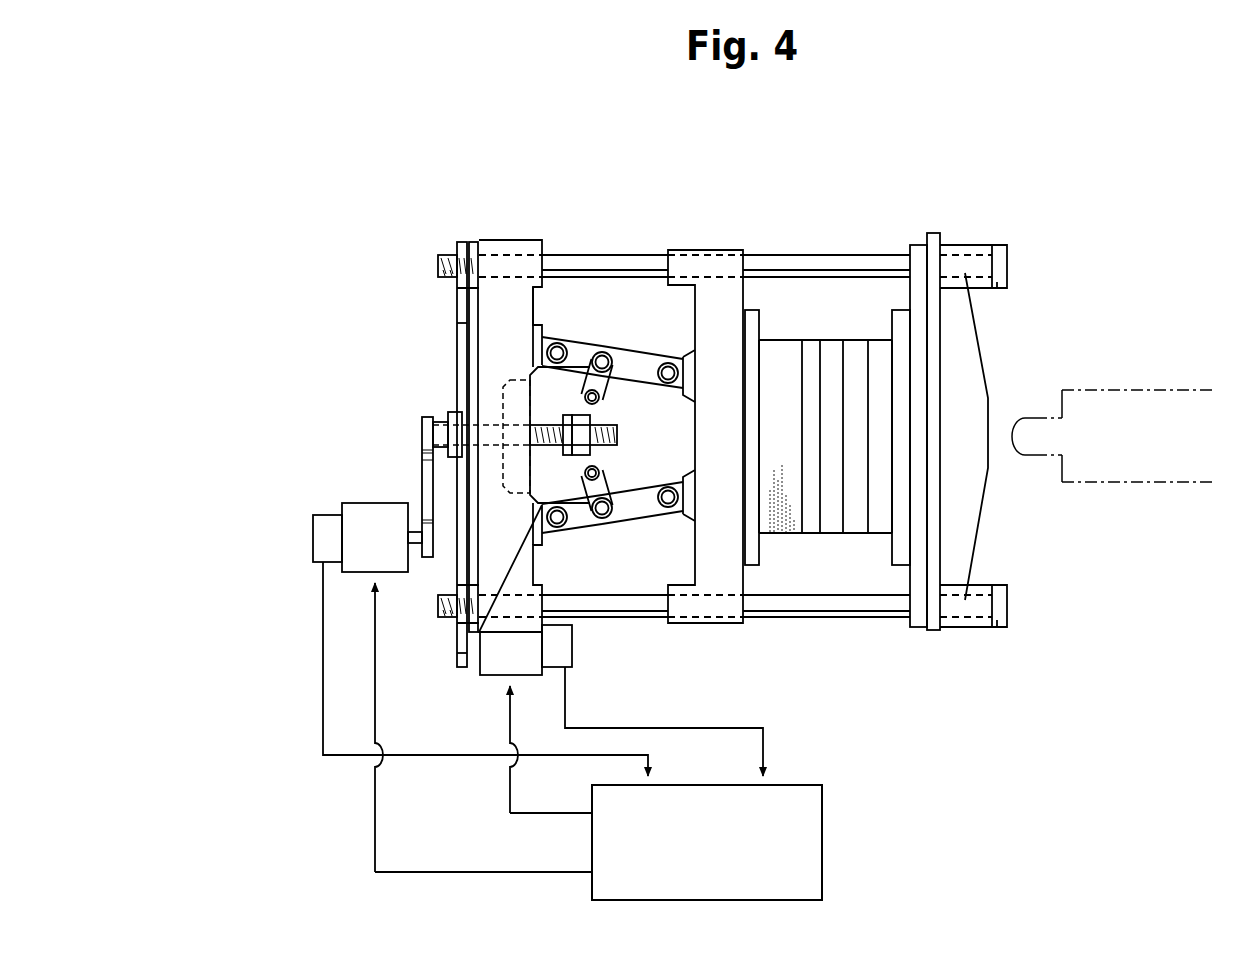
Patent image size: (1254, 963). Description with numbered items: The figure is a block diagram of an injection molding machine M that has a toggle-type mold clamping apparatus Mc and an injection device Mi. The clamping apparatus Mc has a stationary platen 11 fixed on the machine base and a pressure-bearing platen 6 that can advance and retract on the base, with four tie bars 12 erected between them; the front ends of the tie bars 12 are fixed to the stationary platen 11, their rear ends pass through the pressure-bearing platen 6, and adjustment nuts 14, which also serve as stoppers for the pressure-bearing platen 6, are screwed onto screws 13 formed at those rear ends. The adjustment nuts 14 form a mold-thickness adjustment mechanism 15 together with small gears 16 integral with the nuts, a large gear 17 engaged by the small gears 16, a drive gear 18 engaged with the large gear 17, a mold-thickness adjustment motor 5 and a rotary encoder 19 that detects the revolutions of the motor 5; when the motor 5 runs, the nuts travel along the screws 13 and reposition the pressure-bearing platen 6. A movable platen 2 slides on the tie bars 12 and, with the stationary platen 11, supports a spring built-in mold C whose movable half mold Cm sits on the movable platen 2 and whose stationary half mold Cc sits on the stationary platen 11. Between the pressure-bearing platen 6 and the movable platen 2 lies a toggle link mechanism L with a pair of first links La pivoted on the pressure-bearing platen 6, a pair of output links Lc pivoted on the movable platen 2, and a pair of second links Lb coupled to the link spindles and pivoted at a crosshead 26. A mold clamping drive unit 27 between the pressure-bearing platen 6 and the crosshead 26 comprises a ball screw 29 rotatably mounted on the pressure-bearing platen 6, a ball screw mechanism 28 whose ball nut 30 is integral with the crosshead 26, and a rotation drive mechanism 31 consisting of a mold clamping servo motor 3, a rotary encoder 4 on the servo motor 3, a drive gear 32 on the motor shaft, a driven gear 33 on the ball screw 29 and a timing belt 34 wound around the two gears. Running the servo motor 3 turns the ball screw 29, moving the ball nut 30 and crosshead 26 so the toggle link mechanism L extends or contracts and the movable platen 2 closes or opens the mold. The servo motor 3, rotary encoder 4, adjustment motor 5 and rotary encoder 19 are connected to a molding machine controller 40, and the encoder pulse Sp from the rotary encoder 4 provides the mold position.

The movable platen 2 is at (700, 250).
The mold clamping servo motor 3 is at (350, 575).
The rotary encoder 4 is at (313, 538).
The mold-thickness adjustment motor 5 is at (480, 675).
The pressure-bearing platen 6 is at (523, 240).
The stationary platen 11 is at (980, 533).
The tie bars 12 is at (803, 255).
The screws 13 is at (440, 268).
The adjustment nuts 14 is at (473, 240).
The mold-thickness adjustment mechanism 15 is at (378, 281).
The small gears 16 is at (462, 240).
The large gear 17 is at (457, 323).
The drive gear 18 is at (457, 653).
The rotary encoder 19 is at (572, 667).
The crosshead 26 is at (572, 413).
The mold clamping drive unit 27 is at (293, 420).
The ball screw mechanism 28 is at (560, 478).
The ball screw 29 is at (618, 437).
The ball nut 30 is at (503, 403).
The rotation drive mechanism 31 is at (330, 472).
The drive gear 32 is at (422, 527).
The driven gear 33 is at (420, 428).
The timing belt 34 is at (420, 470).
The molding machine controller 40 is at (822, 843).
The spring built-in mold C is at (785, 324).
The movable half mold Cm is at (788, 563).
The stationary half mold Cc is at (882, 571).
The toggle link mechanism L is at (623, 494).
The first links La is at (592, 342).
The second links Lb is at (607, 388).
The output links Lc is at (638, 352).
The injection molding machine M is at (1120, 259).
The toggle-type mold clamping apparatus Mc is at (997, 228).
The injection device Mi is at (1152, 380).
The encoder pulse Sp is at (442, 758).